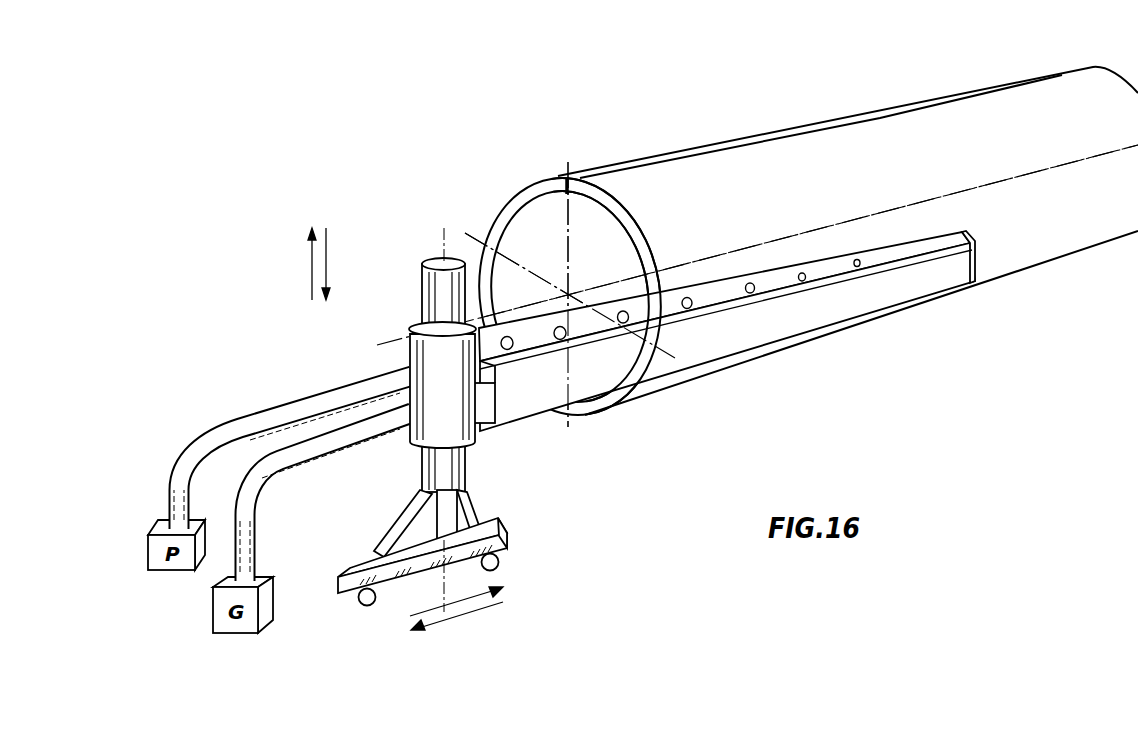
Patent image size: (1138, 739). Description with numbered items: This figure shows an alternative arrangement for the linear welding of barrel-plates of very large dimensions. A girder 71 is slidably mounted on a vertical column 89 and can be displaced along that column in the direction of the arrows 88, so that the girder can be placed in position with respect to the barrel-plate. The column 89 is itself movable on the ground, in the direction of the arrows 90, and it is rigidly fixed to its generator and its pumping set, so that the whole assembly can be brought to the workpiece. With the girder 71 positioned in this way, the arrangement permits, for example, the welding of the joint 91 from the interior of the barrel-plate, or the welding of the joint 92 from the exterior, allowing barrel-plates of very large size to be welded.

The girder 71 is at (538, 398).
The arrows 88 is at (299, 265).
The column 89 is at (432, 293).
The arrows 90 is at (456, 615).
The joint 91 is at (575, 410).
The joint 92 is at (569, 178).